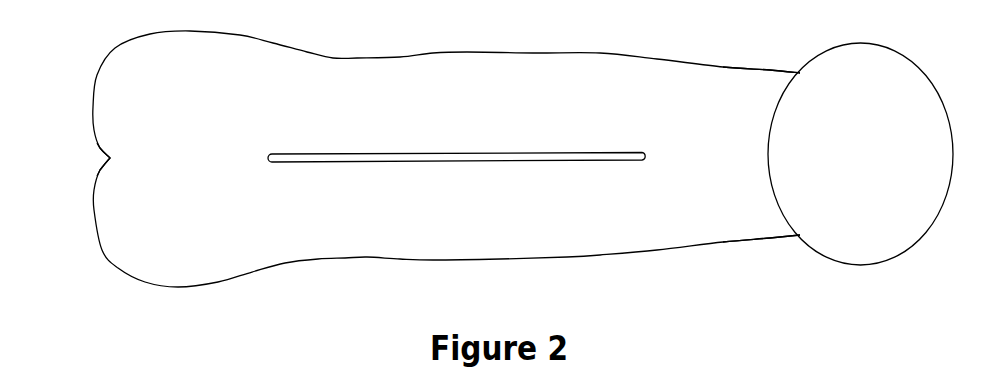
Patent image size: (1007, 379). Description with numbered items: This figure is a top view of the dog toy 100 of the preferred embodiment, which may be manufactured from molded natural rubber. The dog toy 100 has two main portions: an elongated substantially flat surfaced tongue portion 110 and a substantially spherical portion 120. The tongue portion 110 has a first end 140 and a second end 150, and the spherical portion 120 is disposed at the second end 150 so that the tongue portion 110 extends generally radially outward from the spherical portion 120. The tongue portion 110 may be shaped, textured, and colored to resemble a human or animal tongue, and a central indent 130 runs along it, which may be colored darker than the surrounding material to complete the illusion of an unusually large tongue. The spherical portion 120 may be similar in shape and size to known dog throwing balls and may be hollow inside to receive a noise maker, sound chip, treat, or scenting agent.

The dog toy 100 is at (499, 159).
The elongated substantially flat surfaced portion 110 is at (446, 159).
The substantially spherical portion 120 is at (860, 154).
The central indent 130 is at (600, 160).
The first end 140 is at (100, 148).
The second end 150 is at (761, 154).